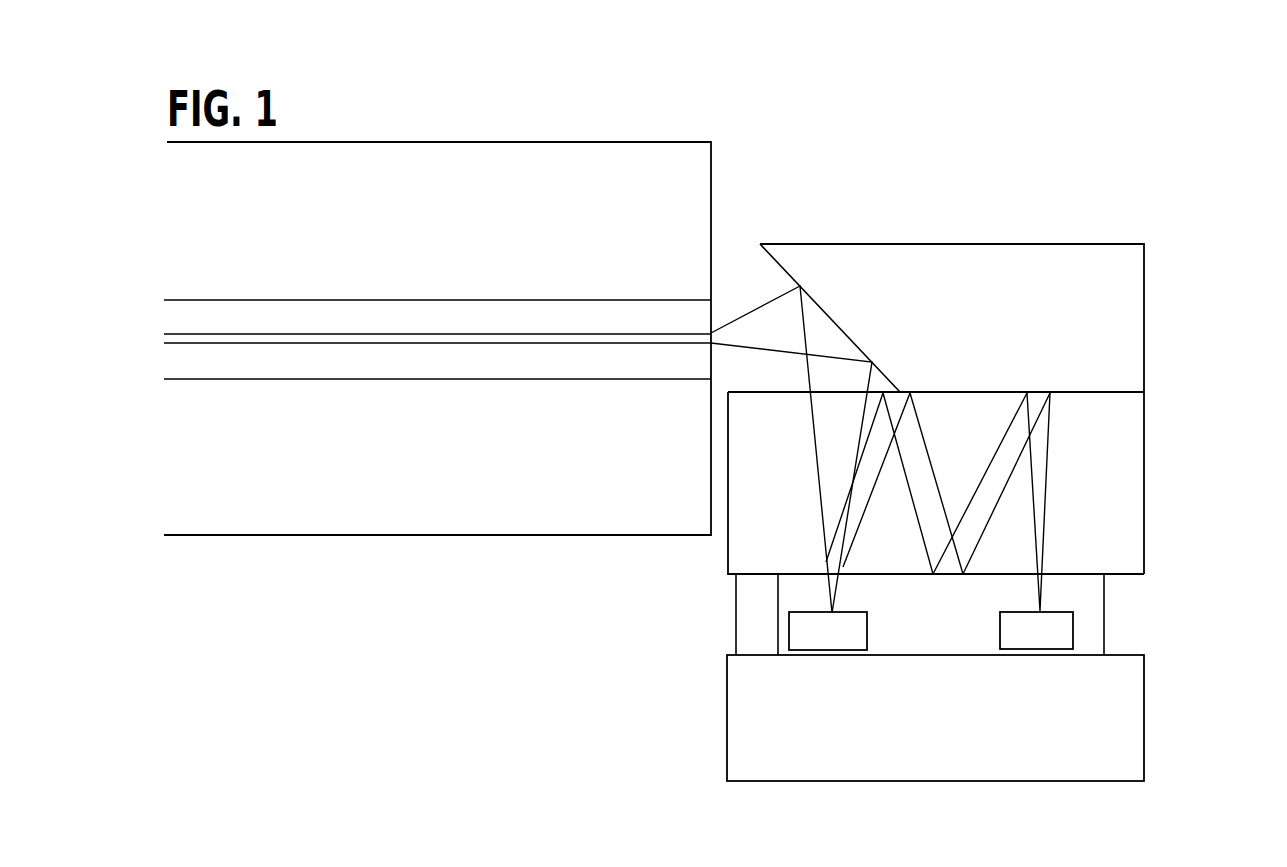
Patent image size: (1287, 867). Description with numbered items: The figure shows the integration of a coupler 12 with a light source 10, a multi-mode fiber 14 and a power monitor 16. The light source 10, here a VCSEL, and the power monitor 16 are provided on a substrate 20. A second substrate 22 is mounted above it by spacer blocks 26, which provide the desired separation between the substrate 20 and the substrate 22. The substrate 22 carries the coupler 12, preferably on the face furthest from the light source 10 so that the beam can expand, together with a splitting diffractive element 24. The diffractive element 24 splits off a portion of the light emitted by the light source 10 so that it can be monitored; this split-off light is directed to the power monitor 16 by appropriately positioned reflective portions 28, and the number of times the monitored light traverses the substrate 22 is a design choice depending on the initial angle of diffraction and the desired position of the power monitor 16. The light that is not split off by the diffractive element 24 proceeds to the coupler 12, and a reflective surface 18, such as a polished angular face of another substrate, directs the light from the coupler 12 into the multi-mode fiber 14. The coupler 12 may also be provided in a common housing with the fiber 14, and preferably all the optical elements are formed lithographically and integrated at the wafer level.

The light source 10 is at (868, 633).
The coupler 12 is at (833, 393).
The multi-mode fiber 14 is at (713, 158).
The power monitor 16 is at (1000, 630).
The reflective surface 18 is at (820, 310).
The substrate 20 is at (727, 718).
The substrate 22 is at (1144, 443).
The splitting diffractive element 24 is at (840, 588).
The spacer blocks 26 is at (736, 613).
The reflective portions 28 is at (935, 579).